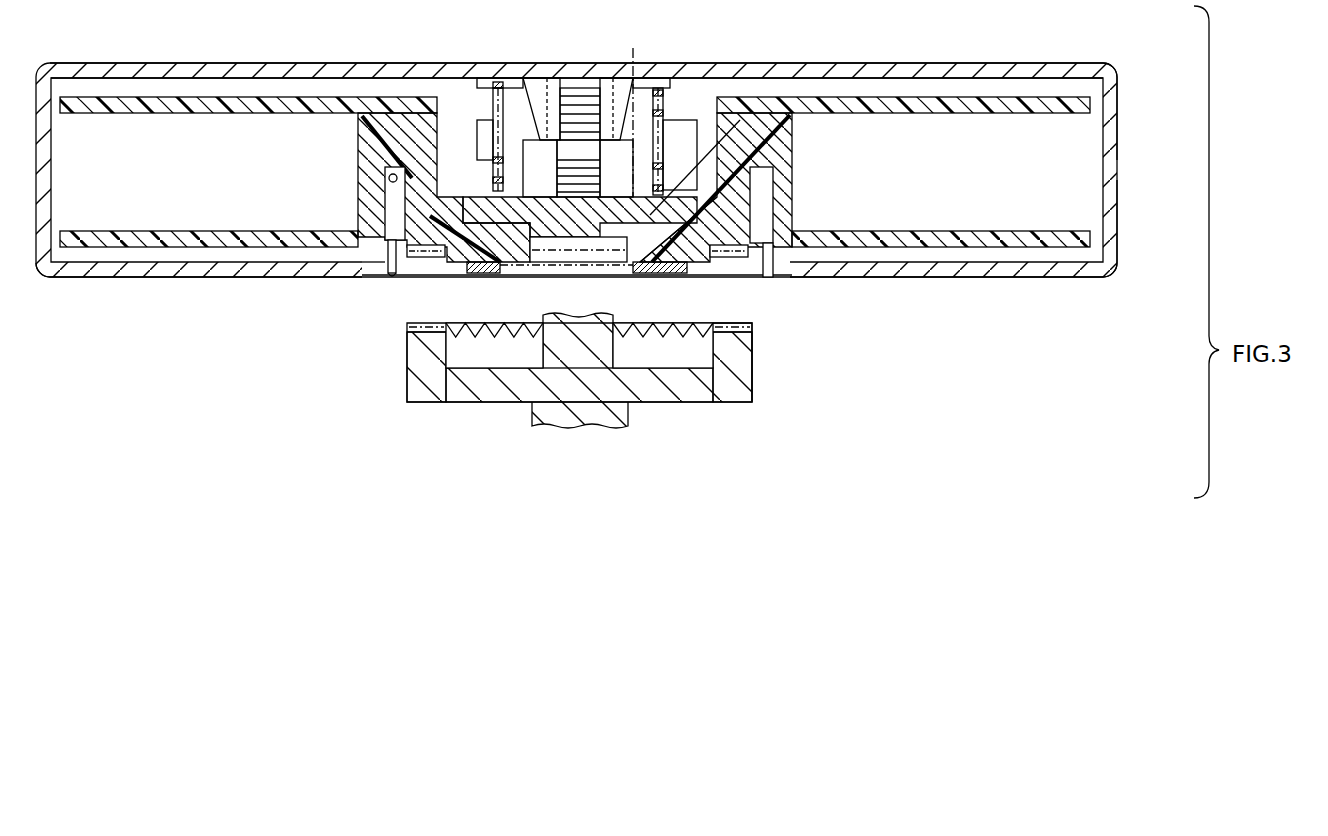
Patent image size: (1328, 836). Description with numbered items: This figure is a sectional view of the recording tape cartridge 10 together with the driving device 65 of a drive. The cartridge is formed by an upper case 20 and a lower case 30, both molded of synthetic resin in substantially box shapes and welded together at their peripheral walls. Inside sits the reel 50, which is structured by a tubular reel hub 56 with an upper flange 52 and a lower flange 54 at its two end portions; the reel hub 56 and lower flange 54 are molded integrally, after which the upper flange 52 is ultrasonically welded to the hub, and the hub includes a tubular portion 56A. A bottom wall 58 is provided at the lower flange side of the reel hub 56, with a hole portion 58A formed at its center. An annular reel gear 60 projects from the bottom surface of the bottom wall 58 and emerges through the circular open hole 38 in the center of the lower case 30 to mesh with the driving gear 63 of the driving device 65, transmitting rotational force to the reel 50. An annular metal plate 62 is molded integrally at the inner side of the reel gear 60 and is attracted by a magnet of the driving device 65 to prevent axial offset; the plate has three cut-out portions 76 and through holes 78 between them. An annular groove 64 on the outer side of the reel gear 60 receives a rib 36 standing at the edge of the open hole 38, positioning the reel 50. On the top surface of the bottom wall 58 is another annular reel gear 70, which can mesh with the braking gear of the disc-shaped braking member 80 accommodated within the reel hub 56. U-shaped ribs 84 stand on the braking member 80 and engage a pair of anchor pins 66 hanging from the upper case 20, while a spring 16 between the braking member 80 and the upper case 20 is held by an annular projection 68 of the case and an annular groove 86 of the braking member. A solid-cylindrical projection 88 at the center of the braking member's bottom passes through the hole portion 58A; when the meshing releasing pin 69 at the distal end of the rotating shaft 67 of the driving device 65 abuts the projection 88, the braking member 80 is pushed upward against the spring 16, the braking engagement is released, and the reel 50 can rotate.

The recording tape cartridge 10 is at (1127, 48).
The spring 16 is at (647, 84).
The upper case 20 is at (1103, 120).
The lower case 30 is at (1103, 226).
The rib 36 is at (392, 243).
The open hole 38 is at (396, 278).
The reel 50 is at (873, 95).
The upper flange 52 is at (952, 103).
The lower flange 54 is at (926, 237).
The reel hub 56 is at (793, 158).
The tubular portion 56A is at (793, 200).
The bottom wall 58 is at (740, 262).
The hole portion 58A is at (622, 266).
The reel gear 60 is at (773, 268).
The metal plate 62 is at (700, 270).
The driving gear 63 is at (753, 330).
The annular groove 64 is at (389, 178).
The driving device 65 is at (782, 393).
The anchor pins 66 is at (632, 109).
The rotating shaft 67 is at (630, 415).
The annular projection 68 is at (497, 86).
The meshing releasing pin 69 is at (570, 322).
The reel gear 70 is at (694, 186).
The cut-out portions 76 is at (498, 262).
The through holes 78 is at (672, 272).
The braking member 80 is at (700, 212).
The U-shaped ribs 84 is at (535, 108).
The annular groove 86 is at (493, 183).
The projection 88 is at (586, 262).